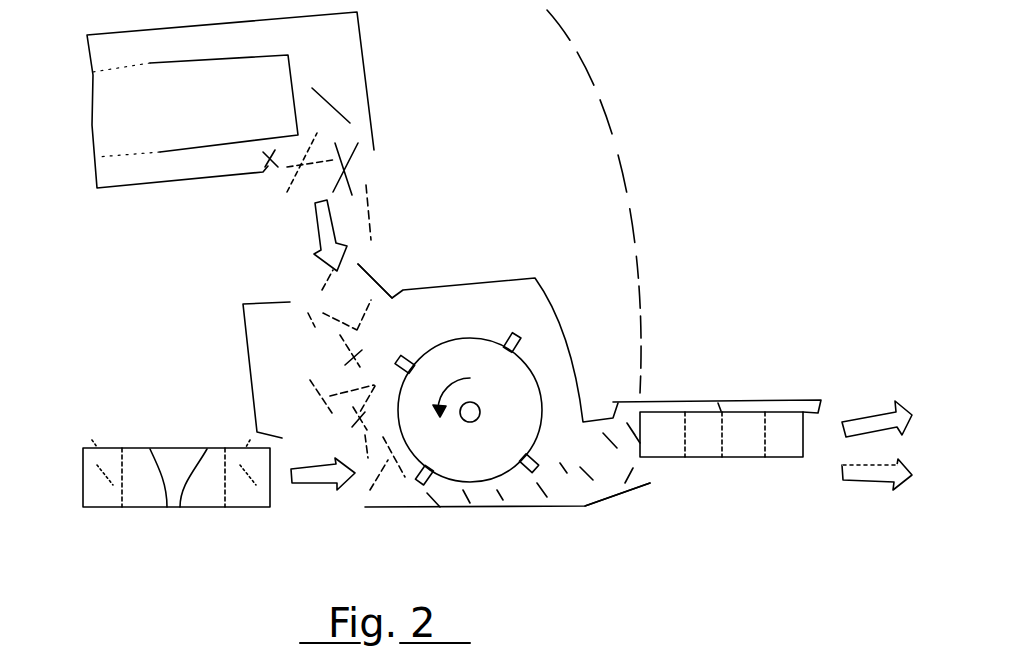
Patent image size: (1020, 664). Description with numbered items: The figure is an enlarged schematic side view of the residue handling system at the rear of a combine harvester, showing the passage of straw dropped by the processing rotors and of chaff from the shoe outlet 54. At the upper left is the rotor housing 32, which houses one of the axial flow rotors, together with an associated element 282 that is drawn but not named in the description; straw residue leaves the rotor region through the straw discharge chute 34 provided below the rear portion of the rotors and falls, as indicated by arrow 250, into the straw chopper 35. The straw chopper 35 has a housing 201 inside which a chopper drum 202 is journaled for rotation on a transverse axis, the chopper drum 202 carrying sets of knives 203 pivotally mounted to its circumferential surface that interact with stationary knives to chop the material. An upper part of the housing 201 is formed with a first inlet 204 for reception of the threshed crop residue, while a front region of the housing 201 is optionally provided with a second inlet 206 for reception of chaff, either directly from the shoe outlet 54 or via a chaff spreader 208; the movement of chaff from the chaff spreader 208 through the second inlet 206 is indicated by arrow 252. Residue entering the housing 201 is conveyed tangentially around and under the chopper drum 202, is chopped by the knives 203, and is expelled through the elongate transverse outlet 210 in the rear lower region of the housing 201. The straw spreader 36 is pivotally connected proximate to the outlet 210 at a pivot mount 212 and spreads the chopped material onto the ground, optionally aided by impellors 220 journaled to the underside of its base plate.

The rotor housing 32 is at (203, 180).
The feed opening 282 is at (162, 152).
The straw discharge chute 34 is at (362, 177).
The arrow 250 is at (318, 243).
The housing 201 is at (557, 309).
The first inlet 204 is at (388, 295).
The second inlet 206 is at (345, 497).
The straw chopper 35 is at (492, 343).
The knives 203 is at (516, 330).
The chopper drum 202 is at (538, 380).
The pivot mount 212 is at (637, 400).
The impellors 220 is at (772, 458).
The straw spreader 36 is at (767, 378).
The outlet 210 is at (652, 468).
The arrow 252 is at (307, 490).
The chaff spreader 208 is at (113, 507).
The shoe outlet 54 is at (93, 390).